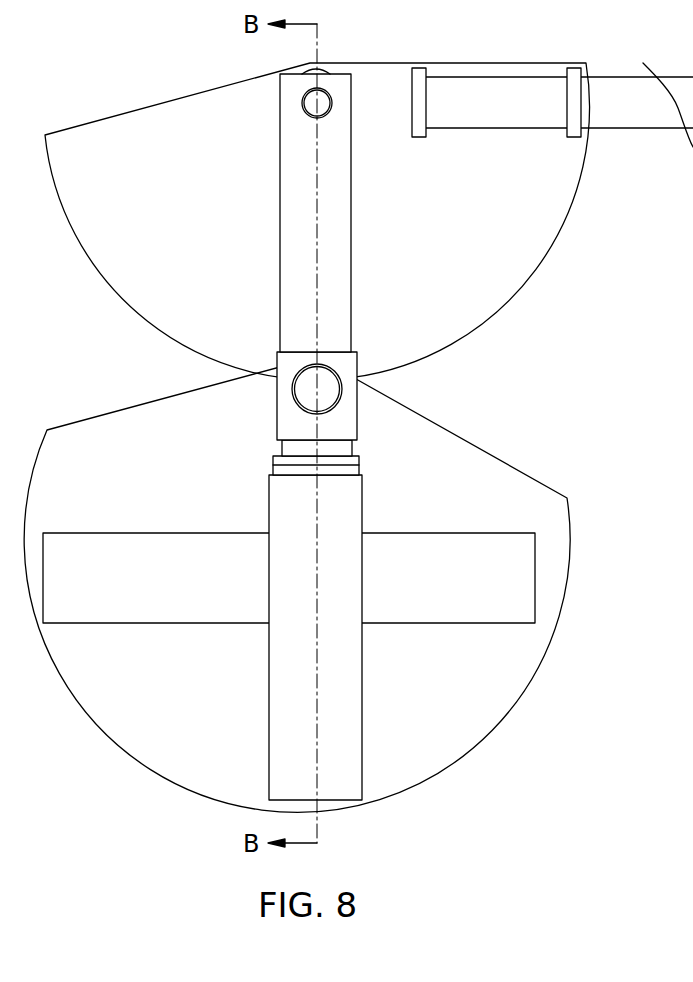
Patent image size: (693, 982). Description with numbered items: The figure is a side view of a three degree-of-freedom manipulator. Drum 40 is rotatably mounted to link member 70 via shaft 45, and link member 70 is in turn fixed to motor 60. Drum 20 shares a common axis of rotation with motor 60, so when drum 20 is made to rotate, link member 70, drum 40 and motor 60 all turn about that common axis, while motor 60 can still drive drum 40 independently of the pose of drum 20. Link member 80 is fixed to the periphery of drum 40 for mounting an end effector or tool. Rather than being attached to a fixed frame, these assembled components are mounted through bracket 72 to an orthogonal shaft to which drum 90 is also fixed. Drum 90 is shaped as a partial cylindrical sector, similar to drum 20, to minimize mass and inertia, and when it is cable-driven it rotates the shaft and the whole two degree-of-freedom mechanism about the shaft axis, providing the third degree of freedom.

The drum 20 is at (460, 428).
The drum 40 is at (558, 232).
The shaft 45 is at (328, 87).
The motor 60 is at (303, 387).
The link member 70 is at (280, 105).
The bracket 72 is at (350, 382).
The link member 80 is at (618, 133).
The drum 90 is at (82, 623).